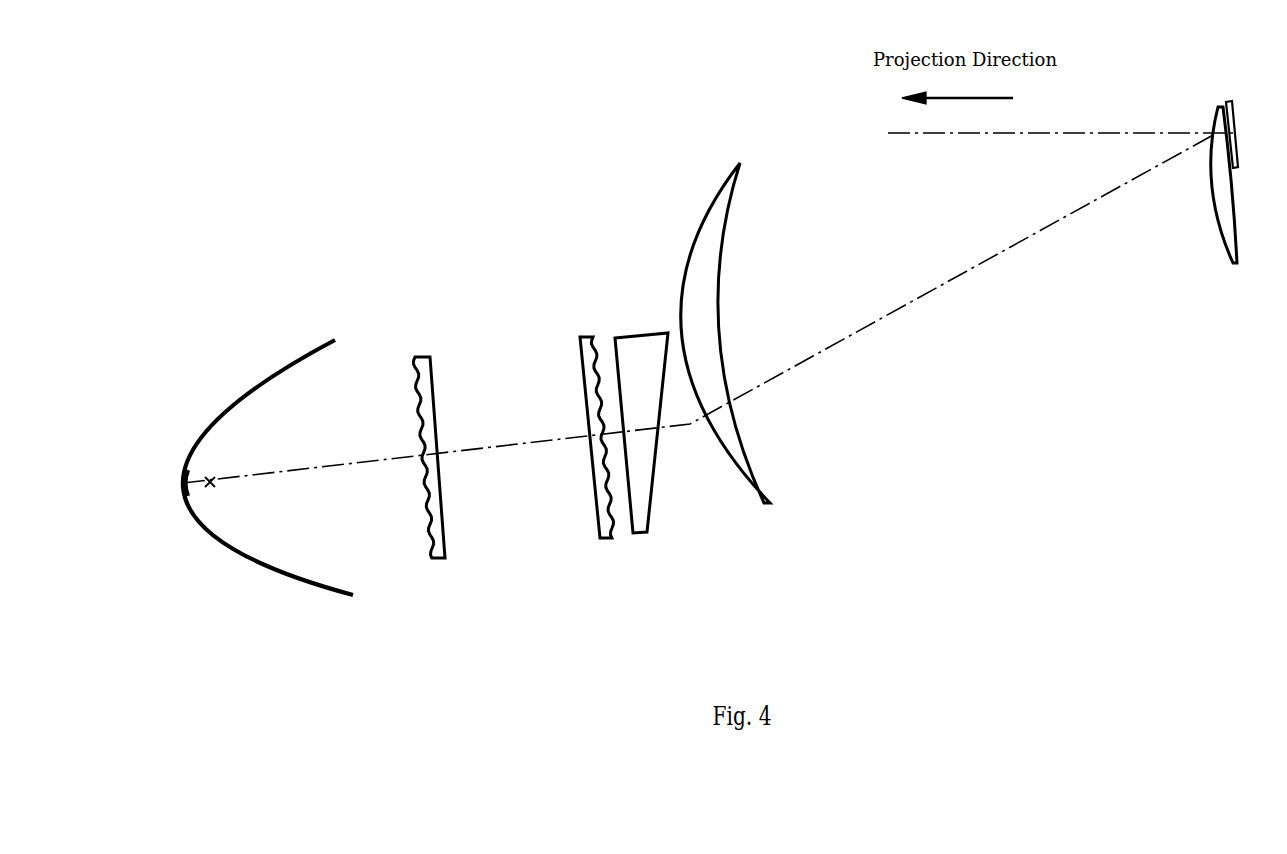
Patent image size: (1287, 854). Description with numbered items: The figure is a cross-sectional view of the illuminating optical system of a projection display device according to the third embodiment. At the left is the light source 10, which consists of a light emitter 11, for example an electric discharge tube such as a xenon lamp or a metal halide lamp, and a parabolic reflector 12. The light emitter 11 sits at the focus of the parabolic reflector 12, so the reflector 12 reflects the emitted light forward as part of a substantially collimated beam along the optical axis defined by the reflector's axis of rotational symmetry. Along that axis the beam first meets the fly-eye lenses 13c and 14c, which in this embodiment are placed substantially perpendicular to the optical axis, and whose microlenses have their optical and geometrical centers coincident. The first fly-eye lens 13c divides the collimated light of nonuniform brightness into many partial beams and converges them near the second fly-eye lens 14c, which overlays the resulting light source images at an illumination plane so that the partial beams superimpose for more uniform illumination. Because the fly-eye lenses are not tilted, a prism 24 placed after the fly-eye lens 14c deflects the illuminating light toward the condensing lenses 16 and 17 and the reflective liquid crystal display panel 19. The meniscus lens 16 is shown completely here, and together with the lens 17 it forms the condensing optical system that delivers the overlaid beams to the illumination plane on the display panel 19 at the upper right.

The light source 10 is at (240, 376).
The light emitter 11 is at (211, 478).
The parabolic reflector 12 is at (213, 418).
The fly-eye lens 13c is at (424, 355).
The fly-eye lens 14c is at (586, 337).
The prism 24 is at (647, 341).
The meniscus lens 16 is at (713, 296).
The lens 17 is at (1220, 213).
The reflective liquid crystal display panel 19 is at (1235, 112).